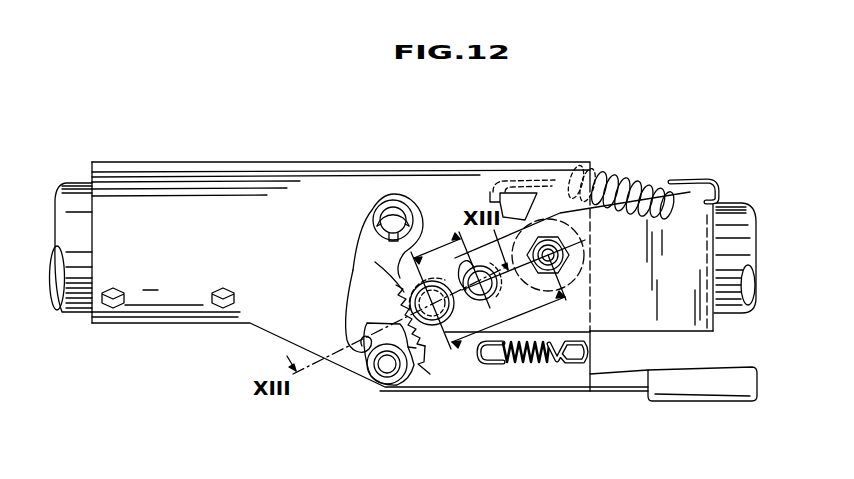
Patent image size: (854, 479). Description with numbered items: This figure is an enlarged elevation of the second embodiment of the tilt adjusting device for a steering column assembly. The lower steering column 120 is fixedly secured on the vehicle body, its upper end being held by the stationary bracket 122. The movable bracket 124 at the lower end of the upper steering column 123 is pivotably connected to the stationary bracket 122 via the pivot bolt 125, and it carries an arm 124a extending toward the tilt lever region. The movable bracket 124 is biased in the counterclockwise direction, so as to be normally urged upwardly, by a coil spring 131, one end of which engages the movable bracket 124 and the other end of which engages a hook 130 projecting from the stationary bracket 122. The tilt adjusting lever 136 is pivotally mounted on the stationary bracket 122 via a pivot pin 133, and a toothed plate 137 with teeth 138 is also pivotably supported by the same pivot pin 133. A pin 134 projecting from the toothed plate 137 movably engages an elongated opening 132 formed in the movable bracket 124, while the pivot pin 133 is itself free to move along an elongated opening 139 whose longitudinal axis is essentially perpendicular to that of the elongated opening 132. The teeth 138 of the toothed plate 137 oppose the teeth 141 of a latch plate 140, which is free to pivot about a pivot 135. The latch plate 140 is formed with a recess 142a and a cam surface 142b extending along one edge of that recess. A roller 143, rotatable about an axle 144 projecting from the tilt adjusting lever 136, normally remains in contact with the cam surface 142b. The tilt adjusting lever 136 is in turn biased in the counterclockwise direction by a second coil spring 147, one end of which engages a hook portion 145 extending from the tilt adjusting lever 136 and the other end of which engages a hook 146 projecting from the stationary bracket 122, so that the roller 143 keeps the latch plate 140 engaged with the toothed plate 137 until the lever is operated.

The lower steering column 120 is at (74, 192).
The stationary bracket 122 is at (192, 162).
The upper steering column 123 is at (736, 204).
The movable bracket 124 is at (686, 331).
The lever arm handle 124a is at (620, 325).
The pivot bolt 125 is at (568, 255).
The hook 130 is at (518, 200).
The coil spring 131 is at (606, 190).
The elongated opening 132 is at (471, 256).
The pivot pin 133 is at (404, 287).
The pin 134 is at (497, 288).
The pivot 135 is at (395, 218).
The tilt adjusting lever 136 is at (365, 378).
The toothed plate 137 is at (392, 270).
The teeth 138 is at (357, 328).
The elongated opening 139 is at (464, 252).
The latch plate 140 is at (366, 217).
The teeth 141 is at (421, 362).
The recess 142a is at (362, 352).
The cam surface 142b is at (422, 395).
The roller 143 is at (394, 380).
The axle 144 is at (384, 385).
The hook portion 145 is at (494, 360).
The hook 146 is at (562, 362).
The coil spring 147 is at (537, 362).